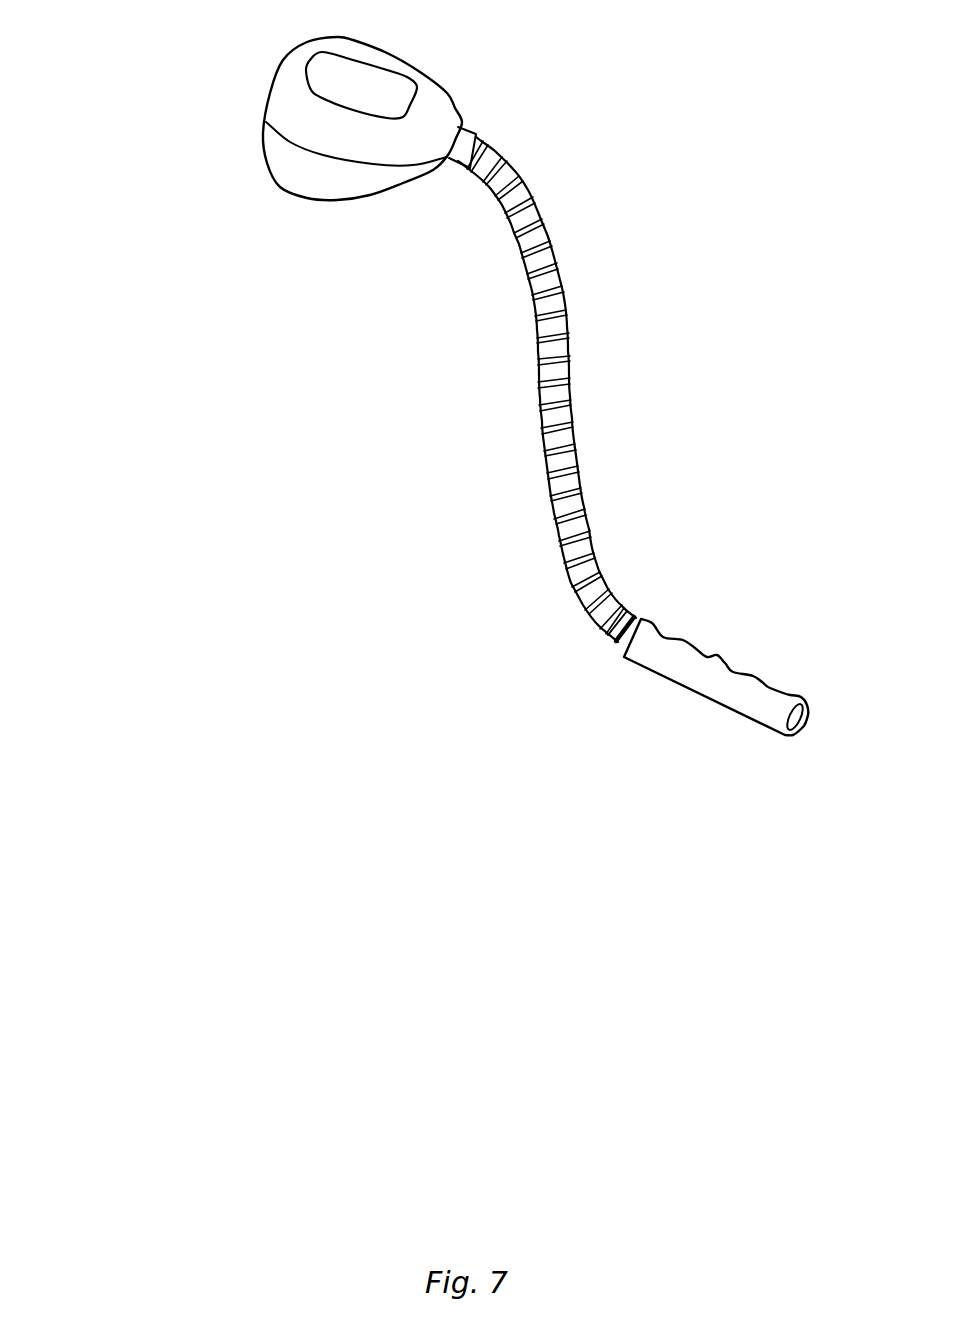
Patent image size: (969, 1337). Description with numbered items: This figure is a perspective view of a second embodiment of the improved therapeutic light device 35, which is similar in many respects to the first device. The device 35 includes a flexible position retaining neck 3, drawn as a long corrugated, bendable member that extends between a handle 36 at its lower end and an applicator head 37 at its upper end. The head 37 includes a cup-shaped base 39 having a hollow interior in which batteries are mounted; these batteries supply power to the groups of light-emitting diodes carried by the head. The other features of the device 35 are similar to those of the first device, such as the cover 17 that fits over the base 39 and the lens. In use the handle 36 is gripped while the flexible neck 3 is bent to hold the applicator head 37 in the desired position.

The cover 17 is at (442, 98).
The cup-shaped base 39 is at (342, 187).
The applicator head 37 is at (310, 169).
The therapeutic light device 35 is at (615, 389).
The flexible position retaining neck 3 is at (588, 382).
The handle 36 is at (707, 680).